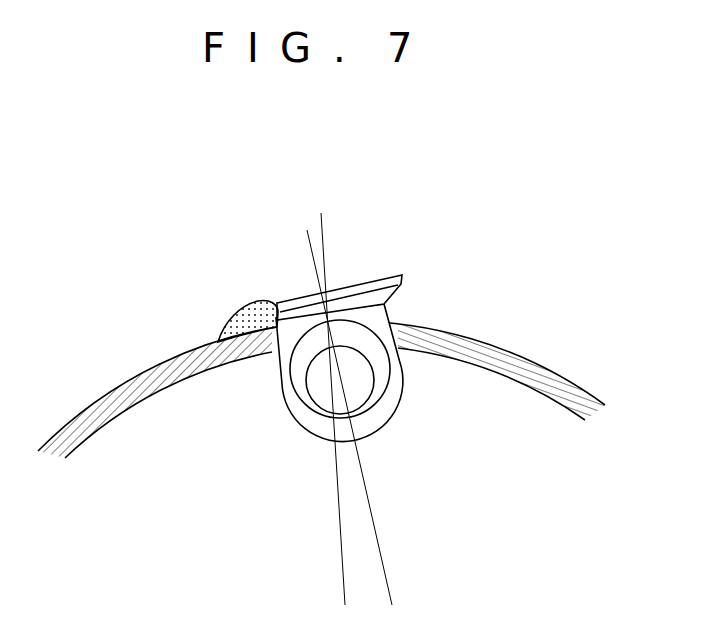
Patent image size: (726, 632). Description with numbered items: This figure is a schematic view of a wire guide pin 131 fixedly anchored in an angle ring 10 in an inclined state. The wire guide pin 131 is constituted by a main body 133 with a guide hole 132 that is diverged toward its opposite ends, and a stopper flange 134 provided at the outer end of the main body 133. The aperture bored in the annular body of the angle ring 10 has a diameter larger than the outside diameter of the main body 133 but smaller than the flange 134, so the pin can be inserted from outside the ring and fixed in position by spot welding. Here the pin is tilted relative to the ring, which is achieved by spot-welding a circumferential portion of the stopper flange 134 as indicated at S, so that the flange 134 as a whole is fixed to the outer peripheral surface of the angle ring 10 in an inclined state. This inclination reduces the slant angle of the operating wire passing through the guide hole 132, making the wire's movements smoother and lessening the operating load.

The angle ring 10 is at (528, 367).
The wire guide pin 131 is at (390, 427).
The guide hole 132 is at (313, 380).
The main body 133 is at (305, 415).
The stopper flange 134 is at (365, 287).
The spot weld S is at (235, 317).